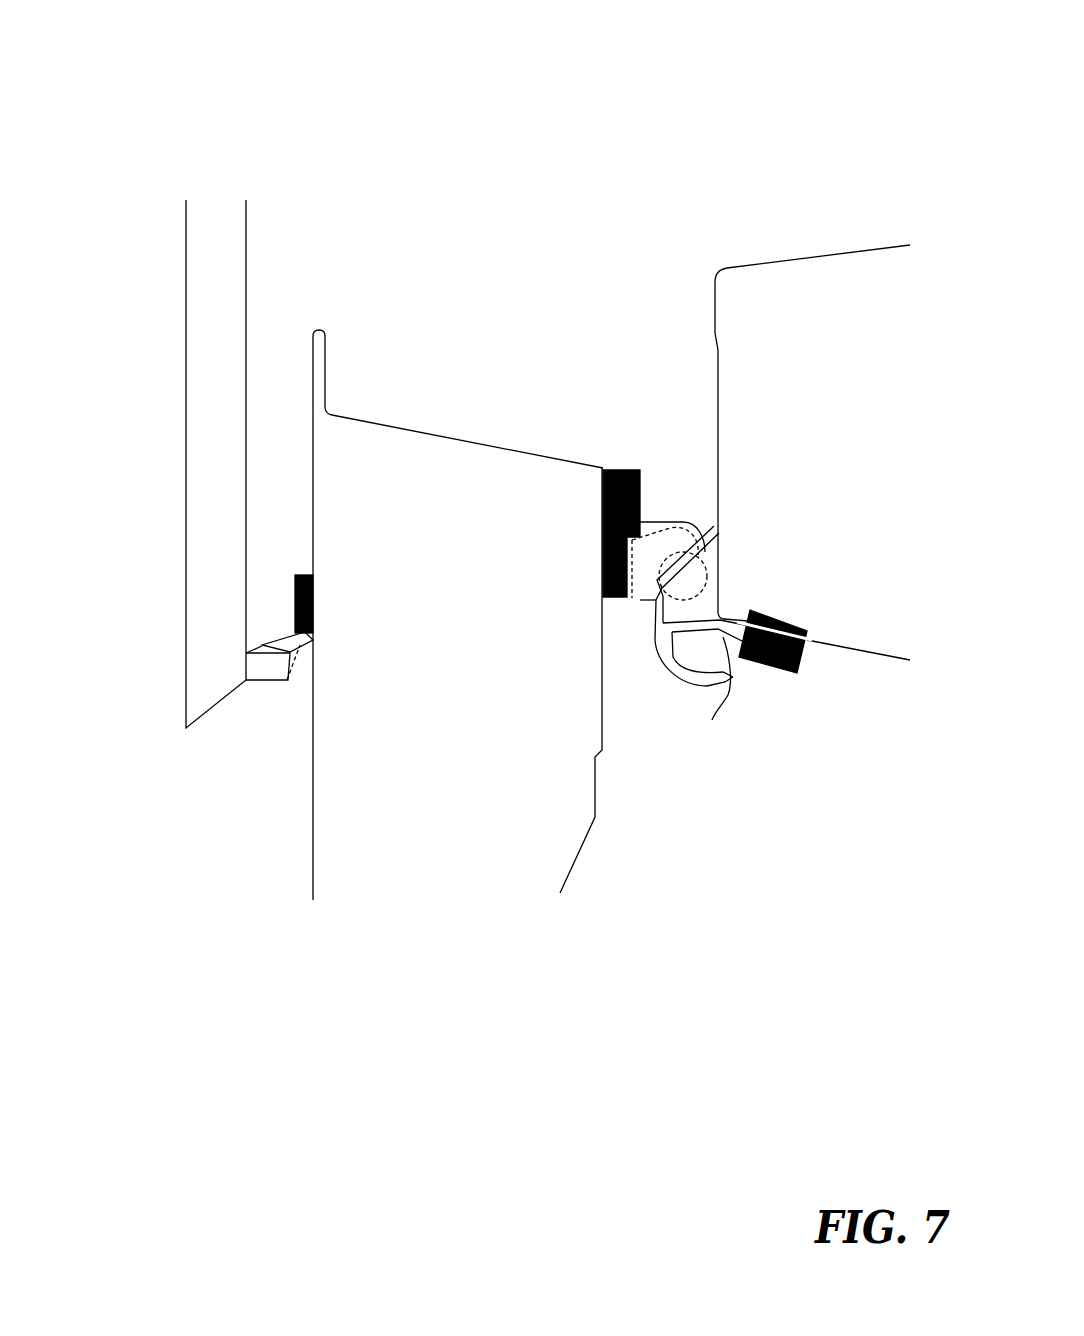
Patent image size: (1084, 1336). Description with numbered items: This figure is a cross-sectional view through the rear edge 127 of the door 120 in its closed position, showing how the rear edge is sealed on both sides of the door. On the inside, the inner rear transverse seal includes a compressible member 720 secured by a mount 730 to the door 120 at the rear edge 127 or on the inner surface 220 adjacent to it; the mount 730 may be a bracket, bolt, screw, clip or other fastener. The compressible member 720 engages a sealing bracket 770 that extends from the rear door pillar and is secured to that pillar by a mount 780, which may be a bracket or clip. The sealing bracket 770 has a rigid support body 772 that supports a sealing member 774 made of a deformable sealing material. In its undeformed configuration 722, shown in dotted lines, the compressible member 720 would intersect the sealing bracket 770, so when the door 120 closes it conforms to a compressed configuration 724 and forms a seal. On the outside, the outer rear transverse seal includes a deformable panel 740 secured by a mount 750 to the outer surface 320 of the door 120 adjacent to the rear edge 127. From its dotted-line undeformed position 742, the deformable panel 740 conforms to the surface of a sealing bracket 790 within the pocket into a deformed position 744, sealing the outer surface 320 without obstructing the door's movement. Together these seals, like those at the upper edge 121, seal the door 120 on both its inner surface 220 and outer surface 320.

The door 120 is at (495, 196).
The upper edge 121 is at (160, 538).
The rear edge 127 is at (455, 460).
The inner surface 220 is at (614, 782).
The outer surface 320 is at (305, 830).
The compressible member 720 is at (657, 518).
The undeformed configuration 722 is at (697, 552).
The compressed configuration 724 is at (668, 528).
The mount 730 is at (605, 468).
The deformable panel 740 is at (316, 648).
The undeformed position 742 is at (299, 675).
The deformed position 744 is at (262, 648).
The mount 750 is at (314, 592).
The sealing bracket 770 is at (766, 686).
The support body 772 is at (718, 690).
The sealing member 774 is at (718, 540).
The mount 780 is at (760, 612).
The sealing bracket 790 is at (253, 683).